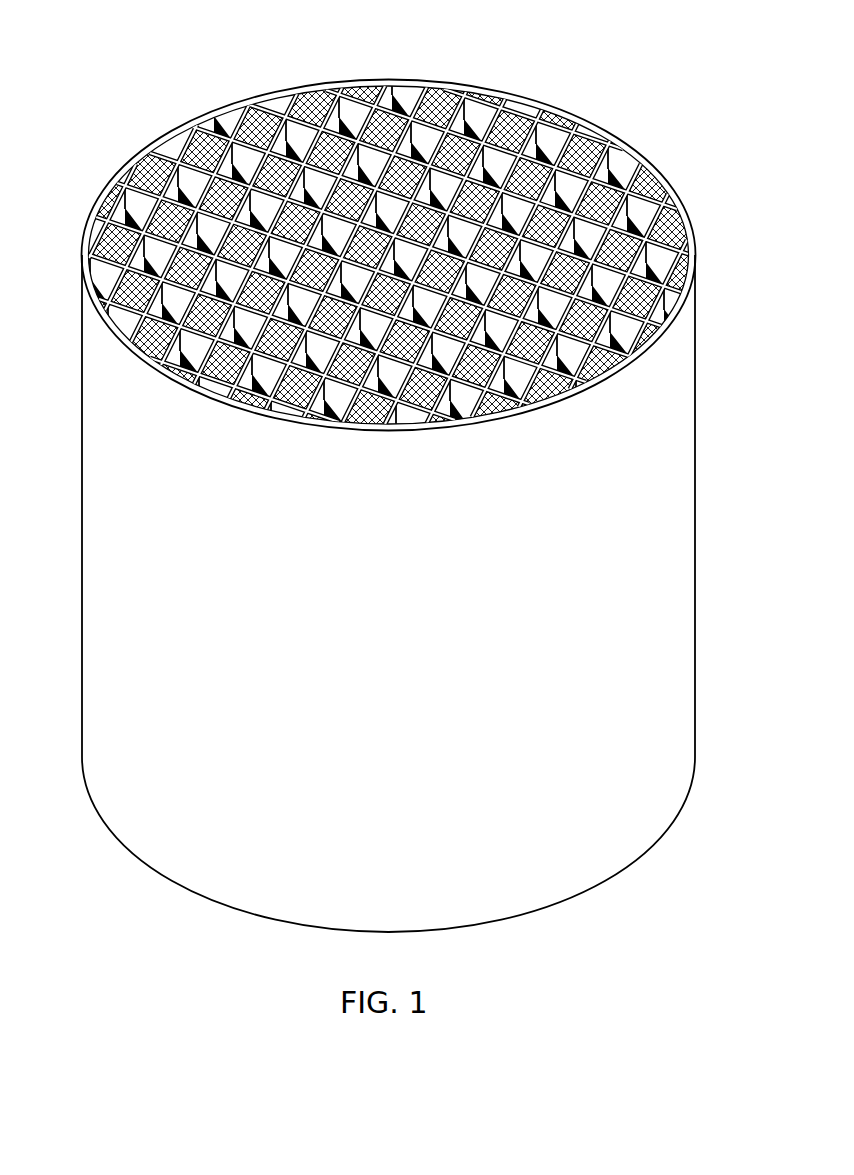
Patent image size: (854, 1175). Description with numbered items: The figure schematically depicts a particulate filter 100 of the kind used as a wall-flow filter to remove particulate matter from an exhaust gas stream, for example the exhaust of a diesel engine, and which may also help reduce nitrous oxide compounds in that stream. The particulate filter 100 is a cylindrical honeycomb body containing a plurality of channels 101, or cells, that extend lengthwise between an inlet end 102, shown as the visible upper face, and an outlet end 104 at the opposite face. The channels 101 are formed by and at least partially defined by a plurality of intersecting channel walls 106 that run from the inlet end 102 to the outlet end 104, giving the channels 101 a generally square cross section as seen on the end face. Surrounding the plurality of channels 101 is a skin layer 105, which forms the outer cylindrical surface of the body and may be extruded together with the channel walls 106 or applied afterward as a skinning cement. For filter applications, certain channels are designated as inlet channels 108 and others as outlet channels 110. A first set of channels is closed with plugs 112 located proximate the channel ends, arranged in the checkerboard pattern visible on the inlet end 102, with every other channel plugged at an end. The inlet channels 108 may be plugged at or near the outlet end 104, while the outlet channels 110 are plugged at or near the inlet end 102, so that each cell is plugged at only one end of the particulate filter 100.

The particulate filter 100 is at (615, 75).
The channels 101 is at (128, 253).
The inlet end 102 is at (663, 160).
The outlet end 104 is at (522, 928).
The skin layer 105 is at (695, 436).
The channel walls 106 is at (430, 123).
The inlet channels 108 is at (252, 148).
The outlet channels 110 is at (208, 160).
The plugs 112 is at (297, 132).